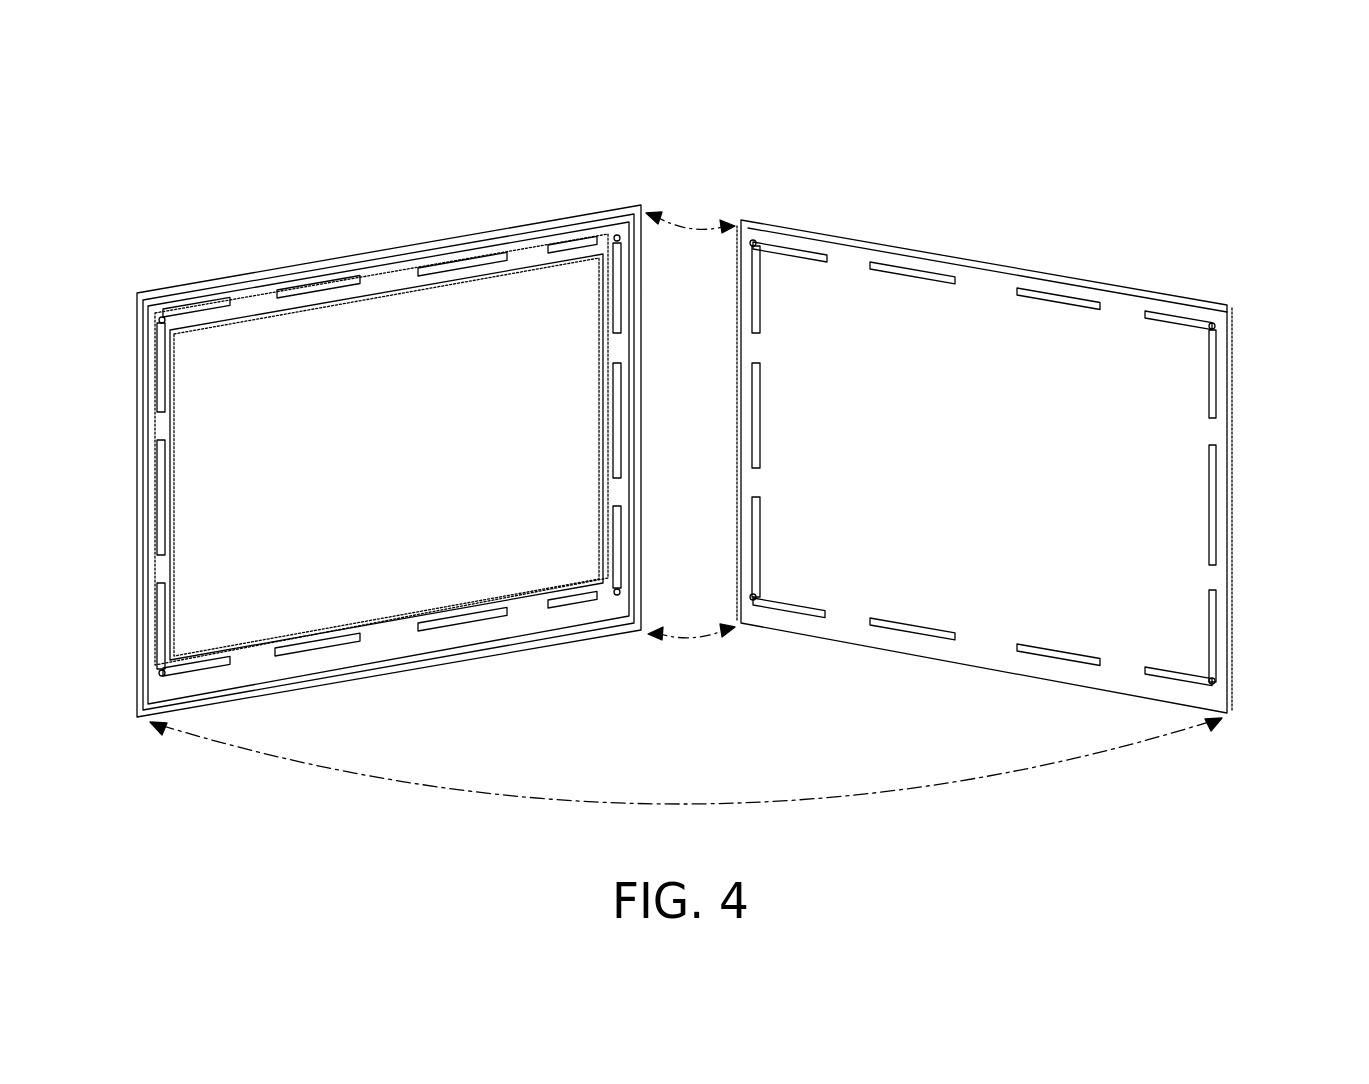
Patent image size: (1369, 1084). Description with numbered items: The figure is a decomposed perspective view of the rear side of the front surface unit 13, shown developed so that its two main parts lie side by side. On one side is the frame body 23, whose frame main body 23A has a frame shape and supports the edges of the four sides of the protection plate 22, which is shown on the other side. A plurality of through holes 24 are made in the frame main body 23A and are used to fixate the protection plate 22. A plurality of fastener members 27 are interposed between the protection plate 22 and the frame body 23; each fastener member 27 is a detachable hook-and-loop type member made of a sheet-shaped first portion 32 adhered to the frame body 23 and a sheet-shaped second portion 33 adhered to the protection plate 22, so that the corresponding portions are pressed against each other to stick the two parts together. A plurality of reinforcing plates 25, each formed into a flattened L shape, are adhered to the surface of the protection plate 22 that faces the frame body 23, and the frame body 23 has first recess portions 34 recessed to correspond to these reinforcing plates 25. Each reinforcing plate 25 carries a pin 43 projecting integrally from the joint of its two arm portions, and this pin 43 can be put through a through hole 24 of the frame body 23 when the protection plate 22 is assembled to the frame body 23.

The front surface unit 13 is at (899, 150).
The protection plate 22 is at (1145, 290).
The frame body 23 is at (377, 250).
The frame main body 23A is at (412, 266).
The through hole 24 is at (162, 316).
The reinforcing plate 25 is at (800, 246).
The fastener member 27 is at (689, 452).
The first portion 32 is at (302, 290).
The second portion 33 is at (940, 270).
The first recess portion 34 is at (157, 356).
The pin 43 is at (755, 240).